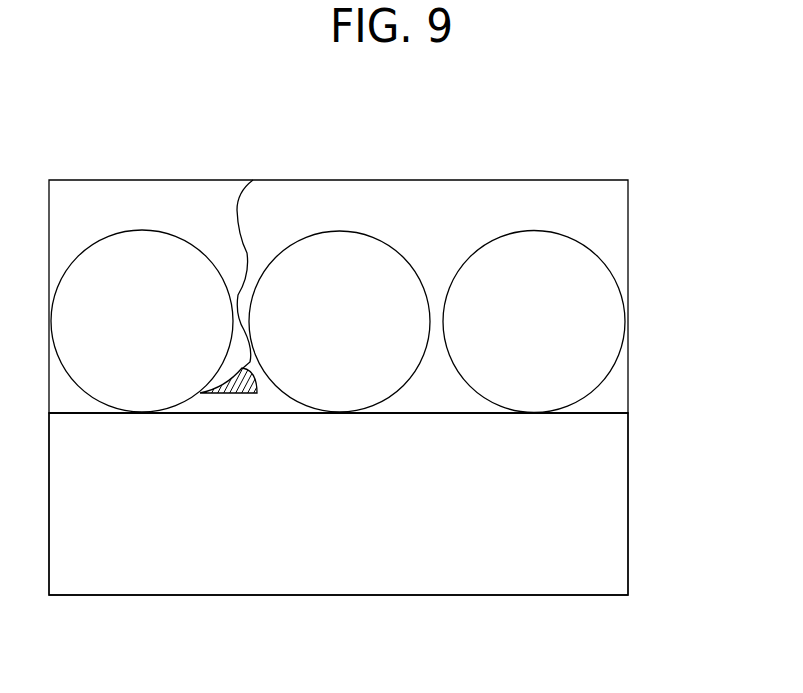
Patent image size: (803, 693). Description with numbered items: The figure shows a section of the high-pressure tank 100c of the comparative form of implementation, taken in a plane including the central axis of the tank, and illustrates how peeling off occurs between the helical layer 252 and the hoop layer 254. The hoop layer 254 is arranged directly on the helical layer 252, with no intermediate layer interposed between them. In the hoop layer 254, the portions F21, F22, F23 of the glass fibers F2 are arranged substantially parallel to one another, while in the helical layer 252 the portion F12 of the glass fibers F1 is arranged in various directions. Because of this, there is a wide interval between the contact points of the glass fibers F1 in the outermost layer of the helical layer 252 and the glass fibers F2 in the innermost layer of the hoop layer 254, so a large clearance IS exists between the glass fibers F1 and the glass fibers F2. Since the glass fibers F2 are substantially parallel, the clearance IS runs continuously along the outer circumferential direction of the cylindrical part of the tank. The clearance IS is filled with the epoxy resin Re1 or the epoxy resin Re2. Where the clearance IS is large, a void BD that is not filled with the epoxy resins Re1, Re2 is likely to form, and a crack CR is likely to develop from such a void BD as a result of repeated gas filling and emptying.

The high-pressure tank 100c is at (434, 128).
The hoop layer 254 is at (649, 275).
The helical layer 252 is at (647, 502).
The epoxy resin Re2 is at (607, 237).
The epoxy resin Re1 is at (605, 412).
The glass fibers F2 is at (338, 272).
The portion of the glass fibers F21 is at (142, 229).
The portion of the glass fibers F22 is at (338, 230).
The portion of the glass fibers F23 is at (533, 230).
The glass fibers F1 is at (338, 537).
The portion of the glass fibers F12 is at (142, 578).
The crack CR is at (237, 200).
The void BD is at (257, 397).
The clearance IS is at (272, 392).